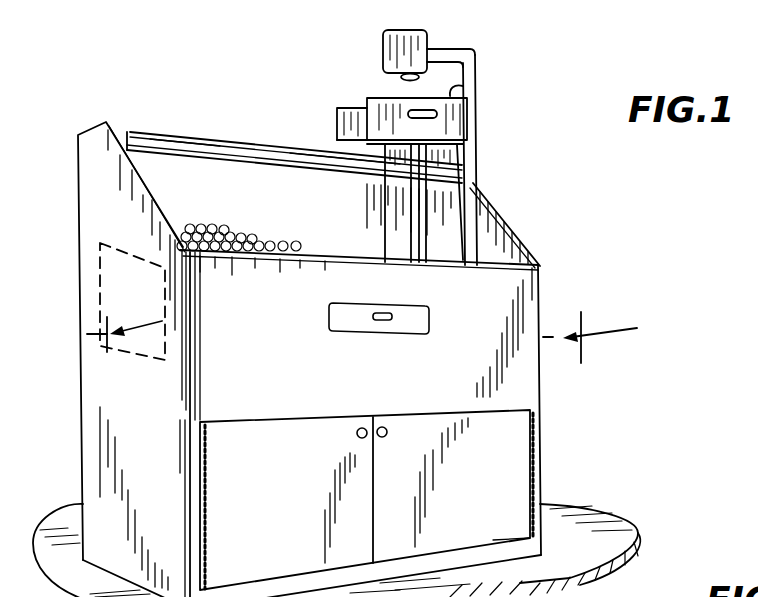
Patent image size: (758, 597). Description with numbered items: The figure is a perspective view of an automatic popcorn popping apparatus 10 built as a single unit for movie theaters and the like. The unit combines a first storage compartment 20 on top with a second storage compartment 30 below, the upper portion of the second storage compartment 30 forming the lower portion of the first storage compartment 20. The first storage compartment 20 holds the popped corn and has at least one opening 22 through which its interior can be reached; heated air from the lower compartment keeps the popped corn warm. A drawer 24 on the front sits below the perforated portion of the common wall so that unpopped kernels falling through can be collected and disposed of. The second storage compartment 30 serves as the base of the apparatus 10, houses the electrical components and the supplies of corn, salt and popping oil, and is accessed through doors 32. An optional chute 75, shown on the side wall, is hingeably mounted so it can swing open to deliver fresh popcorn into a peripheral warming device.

The automatic popcorn popping apparatus 10 is at (560, 241).
The first storage compartment 20 is at (547, 285).
The opening 22 is at (193, 187).
The drawer 24 is at (415, 327).
The second storage compartment 30 is at (566, 438).
The doors 32 is at (493, 540).
The chute 75 is at (101, 253).